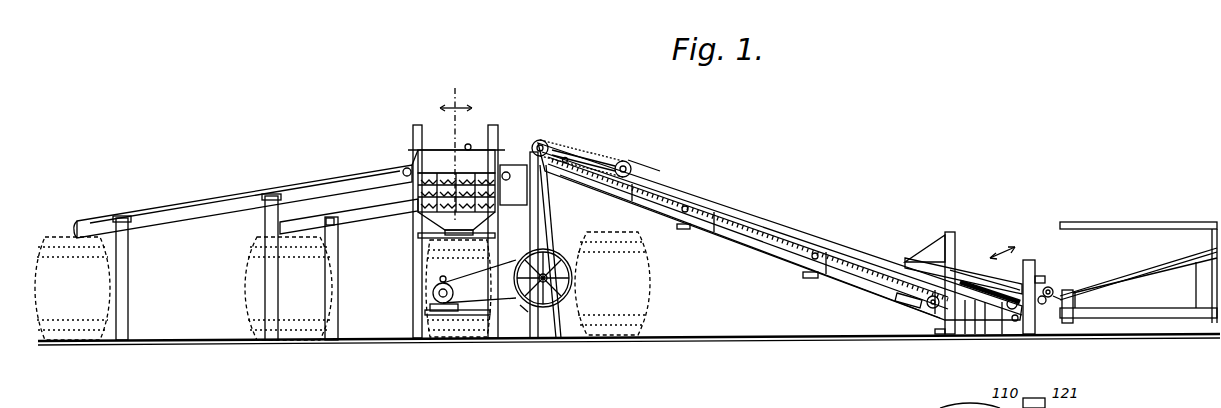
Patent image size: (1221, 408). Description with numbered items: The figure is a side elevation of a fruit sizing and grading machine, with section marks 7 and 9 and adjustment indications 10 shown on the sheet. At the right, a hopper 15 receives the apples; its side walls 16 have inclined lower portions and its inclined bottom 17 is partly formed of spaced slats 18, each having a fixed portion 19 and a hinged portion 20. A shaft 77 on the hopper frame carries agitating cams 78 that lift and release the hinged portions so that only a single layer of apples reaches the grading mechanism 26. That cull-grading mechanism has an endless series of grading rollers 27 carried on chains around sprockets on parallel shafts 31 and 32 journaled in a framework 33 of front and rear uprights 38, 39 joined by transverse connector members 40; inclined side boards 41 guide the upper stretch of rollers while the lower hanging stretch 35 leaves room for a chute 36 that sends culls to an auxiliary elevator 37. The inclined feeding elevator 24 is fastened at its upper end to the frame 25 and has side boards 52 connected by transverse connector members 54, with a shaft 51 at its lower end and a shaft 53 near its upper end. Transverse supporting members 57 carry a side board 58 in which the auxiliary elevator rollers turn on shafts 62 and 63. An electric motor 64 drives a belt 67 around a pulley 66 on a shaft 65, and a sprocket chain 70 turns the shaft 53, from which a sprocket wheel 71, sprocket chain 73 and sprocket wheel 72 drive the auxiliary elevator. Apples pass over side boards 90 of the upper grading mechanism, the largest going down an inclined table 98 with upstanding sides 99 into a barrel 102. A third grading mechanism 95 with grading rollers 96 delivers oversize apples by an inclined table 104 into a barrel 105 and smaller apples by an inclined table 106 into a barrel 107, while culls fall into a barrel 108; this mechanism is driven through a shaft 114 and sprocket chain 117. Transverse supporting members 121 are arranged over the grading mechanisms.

The section line 7- 7 is at (460, 355).
The conveyor belt cleats 9 is at (797, 232).
The adjusting means 10 is at (993, 256).
The hopper 15 is at (1138, 261).
The side walls 16 is at (1138, 267).
The bottom 17 is at (1122, 280).
The slats 18 is at (1188, 285).
The fixed portion 19 is at (1168, 272).
The hinged portion 20 is at (1076, 310).
The feeding elevator 24 is at (746, 217).
The frame 25 is at (539, 218).
The grading mechanism 26 is at (1001, 336).
The grading rollers 27 is at (940, 336).
The shaft 31 is at (935, 262).
The shaft 32 is at (1018, 321).
The framework 33 is at (960, 257).
The lower hanging stretch 35 is at (976, 336).
The chute 36 is at (1012, 310).
The auxiliary elevator 37 is at (830, 245).
The front uprights 38 is at (1047, 278).
The rear uprights 39 is at (985, 273).
The transverse connector members 40 is at (950, 232).
The side boards 41 is at (991, 289).
The shaft 51 is at (908, 305).
The side boards 52 is at (762, 243).
The shaft 53 is at (546, 143).
The transverse connector members 54 is at (683, 229).
The transverse supporting members 57 is at (632, 202).
The side board 58 is at (706, 197).
The shaft 62 is at (628, 166).
The shaft 63 is at (1043, 305).
The electric motor 64 is at (432, 293).
The shaft 65 is at (552, 302).
The pulley 66 is at (523, 312).
The belt 67 is at (517, 262).
The sprocket chain 70 is at (552, 178).
The sprocket wheel 71 is at (574, 151).
The sprocket wheel 72 is at (650, 176).
The sprocket chain 73 is at (607, 150).
The shaft 77 is at (1060, 303).
The agitating cams 78 is at (1052, 288).
The side boards 90 is at (436, 158).
The third grading mechanism 95 is at (420, 227).
The grading rollers 96 is at (405, 170).
The inclined table 98 is at (300, 190).
The upstanding sides 99 is at (338, 180).
The barrel 102 is at (110, 284).
The inclined table 104 is at (432, 234).
The barrel 105 is at (420, 274).
The inclined table 106 is at (350, 223).
The barrel 107 is at (258, 294).
The barrel 108 is at (650, 297).
The shaft 114 is at (473, 167).
The sprocket chain 117 is at (506, 200).
The transverse supporting members 121 is at (468, 144).